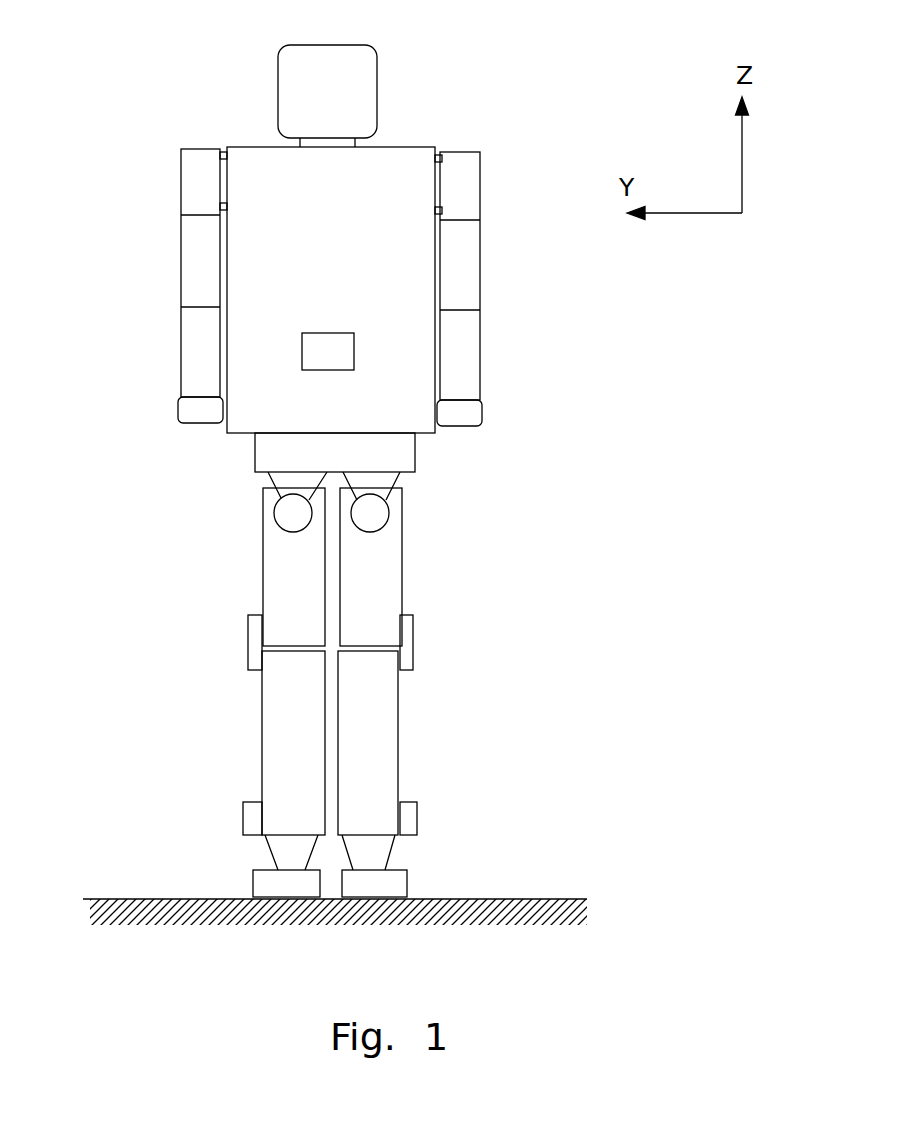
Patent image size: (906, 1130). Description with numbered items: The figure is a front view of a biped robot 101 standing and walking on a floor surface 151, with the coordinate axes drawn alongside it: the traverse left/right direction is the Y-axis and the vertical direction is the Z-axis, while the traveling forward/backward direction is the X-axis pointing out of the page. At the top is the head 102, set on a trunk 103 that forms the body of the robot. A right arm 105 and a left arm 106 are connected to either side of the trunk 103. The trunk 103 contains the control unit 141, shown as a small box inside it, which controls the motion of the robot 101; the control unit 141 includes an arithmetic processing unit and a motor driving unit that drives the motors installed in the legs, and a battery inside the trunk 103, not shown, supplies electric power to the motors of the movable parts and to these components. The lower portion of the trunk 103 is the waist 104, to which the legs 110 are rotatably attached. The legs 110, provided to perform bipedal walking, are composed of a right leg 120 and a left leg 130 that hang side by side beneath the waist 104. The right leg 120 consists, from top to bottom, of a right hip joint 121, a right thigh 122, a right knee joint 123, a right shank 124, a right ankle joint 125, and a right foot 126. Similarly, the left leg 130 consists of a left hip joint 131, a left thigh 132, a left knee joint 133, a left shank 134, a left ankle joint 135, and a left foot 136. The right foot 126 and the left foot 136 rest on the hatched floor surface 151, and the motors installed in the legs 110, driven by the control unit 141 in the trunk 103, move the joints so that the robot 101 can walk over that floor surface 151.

The robot 101 is at (516, 36).
The head 102 is at (237, 70).
The trunk 103 is at (407, 145).
The waist 104 is at (415, 452).
The right arm 105 is at (142, 333).
The left arm 106 is at (513, 333).
The legs 110 is at (569, 700).
The right leg 120 is at (188, 760).
The right hip joint 121 is at (276, 508).
The right thigh 122 is at (262, 572).
The right knee joint 123 is at (248, 640).
The right shank 124 is at (262, 730).
The right ankle joint 125 is at (243, 820).
The right foot 126 is at (255, 882).
The left leg 130 is at (440, 770).
The left hip joint 131 is at (400, 512).
The left thigh 132 is at (403, 565).
The left knee joint 133 is at (412, 642).
The left shank 134 is at (402, 730).
The left ankle joint 135 is at (418, 818).
The left foot 136 is at (408, 880).
The control unit 141 is at (333, 333).
The floor surface 151 is at (110, 898).